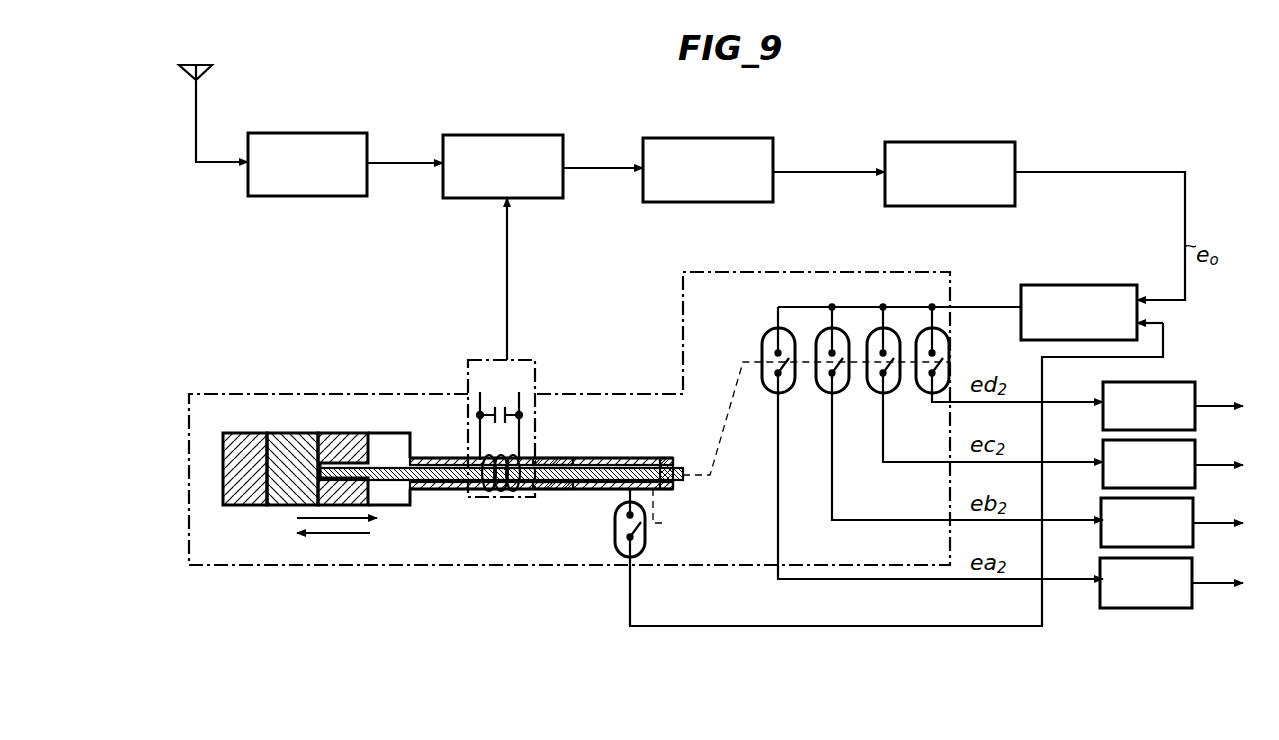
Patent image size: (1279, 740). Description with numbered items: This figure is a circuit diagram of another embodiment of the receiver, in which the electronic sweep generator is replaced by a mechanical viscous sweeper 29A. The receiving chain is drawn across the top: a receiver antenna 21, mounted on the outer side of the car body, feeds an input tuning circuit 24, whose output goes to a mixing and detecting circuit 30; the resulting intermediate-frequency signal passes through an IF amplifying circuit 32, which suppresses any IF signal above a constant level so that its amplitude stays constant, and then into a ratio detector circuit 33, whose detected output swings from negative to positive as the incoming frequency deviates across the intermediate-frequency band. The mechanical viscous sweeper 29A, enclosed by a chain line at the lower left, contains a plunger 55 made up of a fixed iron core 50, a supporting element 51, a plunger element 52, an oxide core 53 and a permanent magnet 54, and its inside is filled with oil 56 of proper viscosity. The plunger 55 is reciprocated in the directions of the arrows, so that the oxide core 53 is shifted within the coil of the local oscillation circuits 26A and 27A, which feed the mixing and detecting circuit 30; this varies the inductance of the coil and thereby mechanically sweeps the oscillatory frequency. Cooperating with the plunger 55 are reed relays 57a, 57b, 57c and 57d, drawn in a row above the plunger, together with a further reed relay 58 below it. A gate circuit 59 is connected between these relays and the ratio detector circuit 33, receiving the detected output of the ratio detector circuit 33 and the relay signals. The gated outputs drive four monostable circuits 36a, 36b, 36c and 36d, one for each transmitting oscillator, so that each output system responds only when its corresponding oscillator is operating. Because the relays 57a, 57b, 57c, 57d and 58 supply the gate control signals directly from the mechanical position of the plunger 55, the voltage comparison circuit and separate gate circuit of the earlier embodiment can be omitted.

The receiver antenna 21 is at (212, 68).
The input tuning circuit 24 is at (333, 150).
The mixing and detecting circuit 30 is at (523, 150).
The IF amplifying circuit 32 is at (710, 152).
The ratio detector circuit 33 is at (946, 155).
The gate circuit 59 is at (1094, 268).
The reed relay 57a is at (770, 340).
The reed relay 57b is at (825, 340).
The reed relay 57c is at (880, 340).
The reed relay 57d is at (925, 340).
The monostable circuit 36a is at (1177, 580).
The monostable circuit 36b is at (1178, 520).
The monostable circuit 36c is at (1178, 461).
The monostable circuit 36d is at (1179, 403).
The mechanical viscous sweeper 29A is at (245, 566).
The local oscillation circuit 26A is at (478, 368).
The local oscillation circuit 27A is at (461, 393).
The fixed iron core 50 is at (242, 436).
The oil 56 is at (293, 436).
The supporting element 51 is at (345, 436).
The plunger element 52 is at (388, 436).
The oxide core 53 is at (553, 490).
The permanent magnet 54 is at (666, 490).
The plunger 55 is at (396, 489).
The reed relay 58 is at (640, 545).